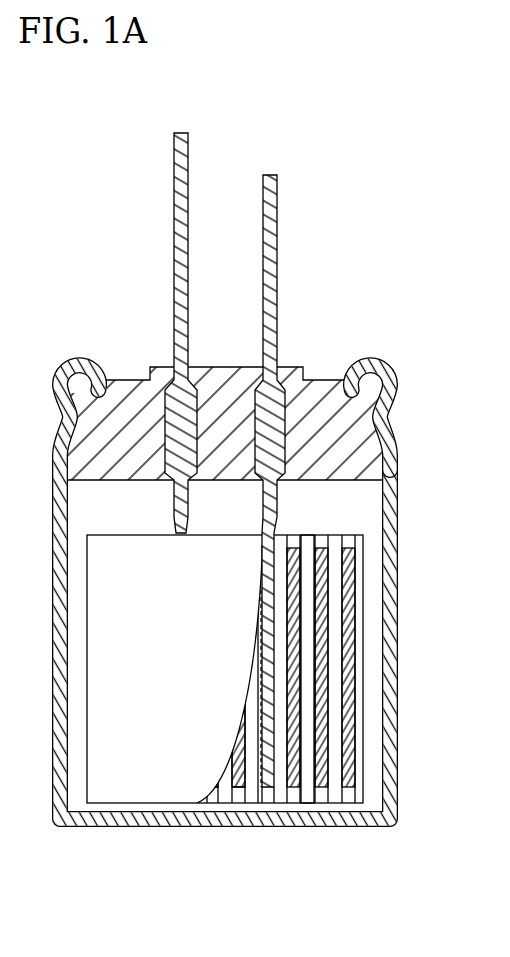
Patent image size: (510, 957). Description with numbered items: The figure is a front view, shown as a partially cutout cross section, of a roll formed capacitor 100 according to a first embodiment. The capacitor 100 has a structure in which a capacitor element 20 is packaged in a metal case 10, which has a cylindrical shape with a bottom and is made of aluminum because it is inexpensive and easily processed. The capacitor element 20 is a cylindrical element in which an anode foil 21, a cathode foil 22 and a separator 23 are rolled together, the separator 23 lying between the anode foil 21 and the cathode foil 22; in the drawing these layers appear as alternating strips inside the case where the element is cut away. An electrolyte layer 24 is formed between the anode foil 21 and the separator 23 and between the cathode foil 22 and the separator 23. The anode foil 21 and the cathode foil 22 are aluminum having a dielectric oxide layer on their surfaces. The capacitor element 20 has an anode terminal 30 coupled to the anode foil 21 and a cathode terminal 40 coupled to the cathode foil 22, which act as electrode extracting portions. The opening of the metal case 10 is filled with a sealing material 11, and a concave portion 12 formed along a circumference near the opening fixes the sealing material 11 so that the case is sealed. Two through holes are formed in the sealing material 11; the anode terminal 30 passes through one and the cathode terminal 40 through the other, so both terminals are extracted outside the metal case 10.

The roll formed capacitor 100 is at (331, 261).
The metal case 10 is at (394, 487).
The sealing material 11 is at (136, 390).
The concave portion 12 is at (388, 437).
The capacitor element 20 is at (147, 797).
The anode foil 21 is at (307, 800).
The cathode foil 22 is at (291, 797).
The separator 23 is at (233, 800).
The electrolyte layer 24 is at (298, 803).
The anode terminal 30 is at (175, 232).
The cathode terminal 40 is at (263, 232).